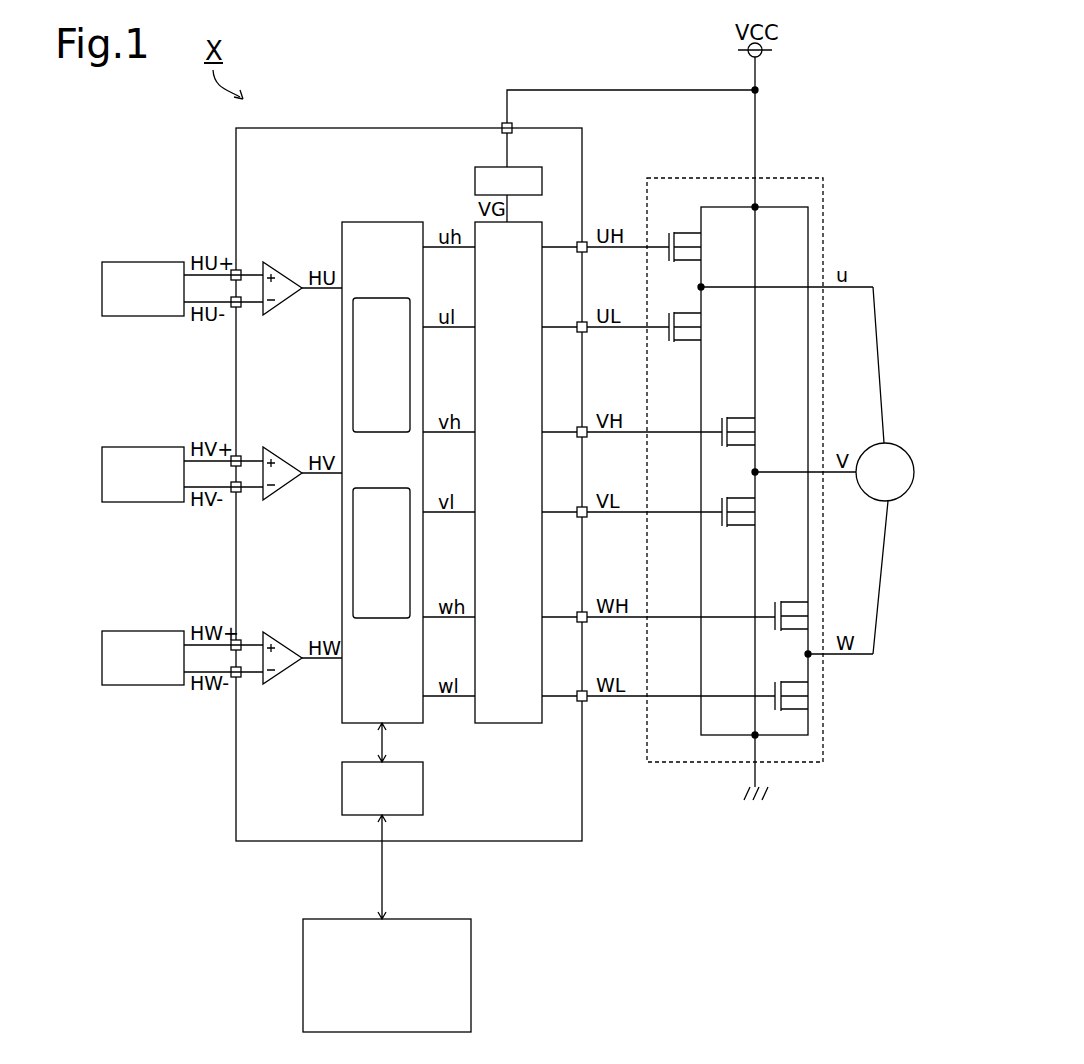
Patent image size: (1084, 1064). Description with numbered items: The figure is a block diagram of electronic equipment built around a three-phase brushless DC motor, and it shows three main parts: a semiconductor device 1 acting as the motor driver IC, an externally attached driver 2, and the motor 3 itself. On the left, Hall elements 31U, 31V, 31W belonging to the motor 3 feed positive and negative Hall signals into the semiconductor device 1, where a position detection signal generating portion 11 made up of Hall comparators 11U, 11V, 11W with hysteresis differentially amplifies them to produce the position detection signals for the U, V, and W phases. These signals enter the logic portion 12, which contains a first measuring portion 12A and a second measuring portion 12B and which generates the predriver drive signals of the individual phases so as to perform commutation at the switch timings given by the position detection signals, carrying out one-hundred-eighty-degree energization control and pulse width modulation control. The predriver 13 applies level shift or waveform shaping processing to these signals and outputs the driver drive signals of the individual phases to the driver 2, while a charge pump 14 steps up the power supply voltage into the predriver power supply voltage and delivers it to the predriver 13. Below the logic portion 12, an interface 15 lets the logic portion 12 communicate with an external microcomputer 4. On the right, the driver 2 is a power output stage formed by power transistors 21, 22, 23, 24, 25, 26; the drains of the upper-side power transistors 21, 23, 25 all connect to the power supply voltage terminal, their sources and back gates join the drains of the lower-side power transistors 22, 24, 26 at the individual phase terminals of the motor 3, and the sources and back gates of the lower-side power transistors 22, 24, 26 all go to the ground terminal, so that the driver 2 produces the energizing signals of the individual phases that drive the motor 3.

The semiconductor device 1 is at (256, 128).
The driver 2 is at (805, 178).
The three-phase brushless DC motor 3 is at (895, 447).
The microcomputer 4 is at (460, 919).
The position detection signal generating portion 11 is at (306, 216).
The Hall comparator 11U is at (284, 254).
The Hall comparator 11V is at (284, 439).
The Hall comparator 11W is at (284, 623).
The logic portion 12 is at (382, 453).
The first measuring portion 12A is at (381, 365).
The second measuring portion 12B is at (381, 553).
The predriver 13 is at (527, 222).
The charge pump 14 is at (541, 167).
The interface 15 is at (416, 762).
The upper-side power transistor 21 is at (707, 248).
The lower-side power transistor 22 is at (707, 328).
The upper-side power transistor 23 is at (760, 433).
The lower-side power transistor 24 is at (760, 513).
The upper-side power transistor 25 is at (814, 617).
The lower-side power transistor 26 is at (814, 697).
The Hall element 31U is at (125, 250).
The Hall element 31V is at (125, 434).
The Hall element 31W is at (125, 618).